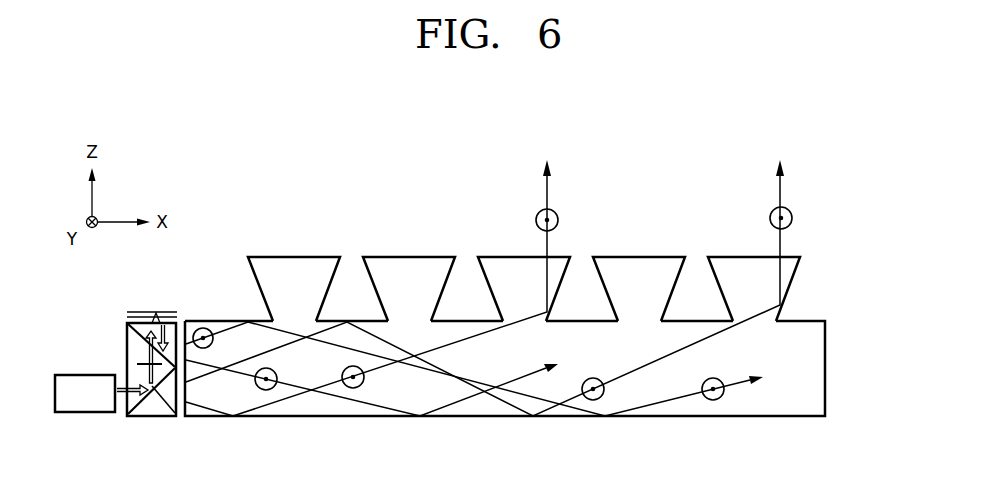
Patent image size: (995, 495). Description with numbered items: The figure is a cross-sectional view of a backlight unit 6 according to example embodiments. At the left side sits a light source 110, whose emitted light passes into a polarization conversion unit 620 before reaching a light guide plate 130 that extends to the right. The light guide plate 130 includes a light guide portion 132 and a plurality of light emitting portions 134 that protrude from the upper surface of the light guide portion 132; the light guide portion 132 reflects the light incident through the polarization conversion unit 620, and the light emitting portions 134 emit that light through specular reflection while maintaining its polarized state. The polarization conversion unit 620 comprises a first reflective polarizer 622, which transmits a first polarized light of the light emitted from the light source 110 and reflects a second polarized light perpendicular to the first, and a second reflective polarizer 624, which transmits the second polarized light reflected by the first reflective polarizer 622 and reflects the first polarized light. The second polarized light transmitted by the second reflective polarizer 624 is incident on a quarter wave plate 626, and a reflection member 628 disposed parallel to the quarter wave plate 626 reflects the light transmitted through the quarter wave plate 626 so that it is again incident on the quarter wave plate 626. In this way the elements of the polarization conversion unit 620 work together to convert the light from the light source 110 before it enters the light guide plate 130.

The backlight unit 6 is at (864, 197).
The light source 110 is at (88, 413).
The light guide plate 130 is at (570, 336).
The light guide portion 132 is at (813, 375).
The light emitting portions 134 is at (573, 288).
The polarization conversion unit 620 is at (137, 368).
The first reflective polarizer 622 is at (122, 366).
The second reflective polarizer 624 is at (132, 340).
The quarter wave plate 626 is at (137, 311).
The reflection member 628 is at (172, 316).